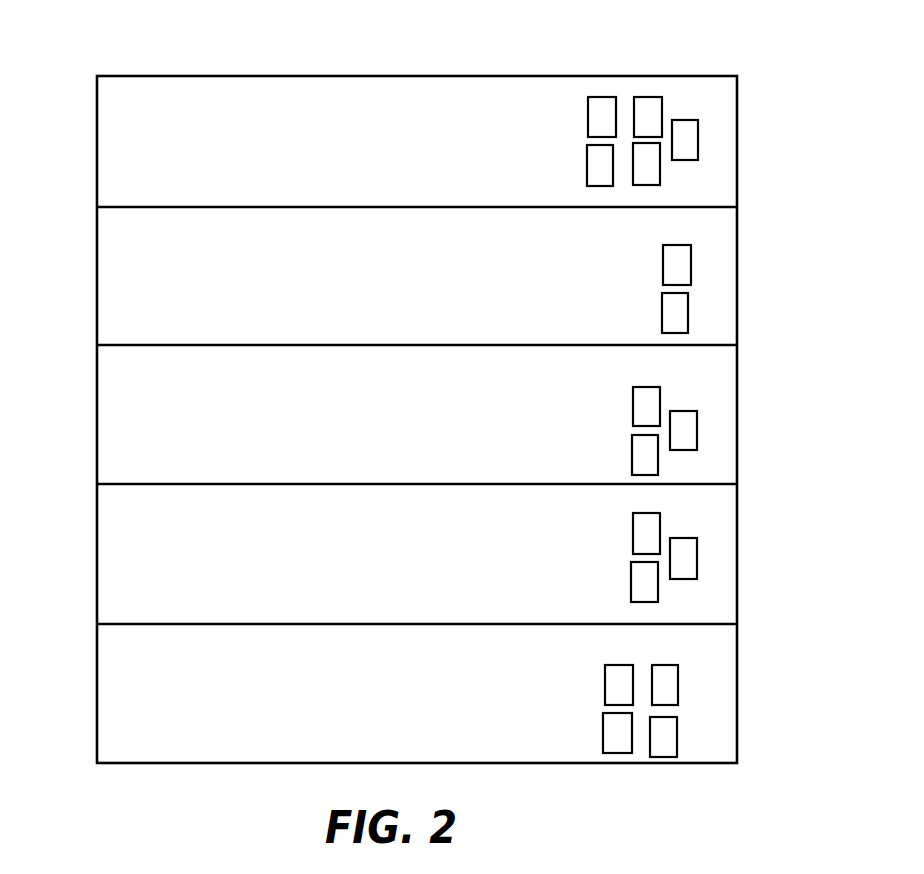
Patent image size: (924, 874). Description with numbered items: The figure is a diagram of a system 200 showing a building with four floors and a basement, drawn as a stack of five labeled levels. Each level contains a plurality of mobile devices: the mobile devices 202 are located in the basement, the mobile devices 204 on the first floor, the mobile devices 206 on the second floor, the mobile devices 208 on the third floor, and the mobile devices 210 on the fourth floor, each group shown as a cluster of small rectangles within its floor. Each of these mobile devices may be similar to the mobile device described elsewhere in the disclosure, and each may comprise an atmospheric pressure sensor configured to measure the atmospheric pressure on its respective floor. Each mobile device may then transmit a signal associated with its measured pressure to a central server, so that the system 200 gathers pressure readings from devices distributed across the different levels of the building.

The system 200 is at (90, 93).
The mobile devices 202 is at (717, 717).
The mobile devices 204 is at (724, 565).
The mobile devices 206 is at (719, 432).
The mobile devices 208 is at (715, 292).
The mobile devices 210 is at (722, 145).